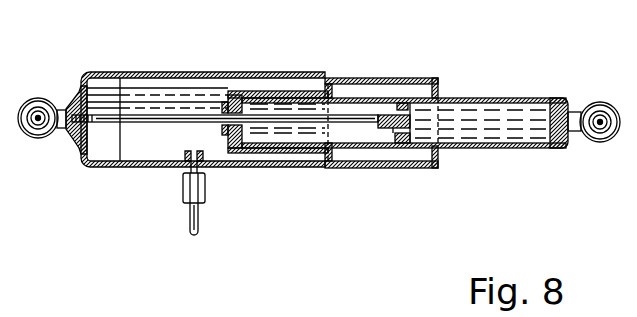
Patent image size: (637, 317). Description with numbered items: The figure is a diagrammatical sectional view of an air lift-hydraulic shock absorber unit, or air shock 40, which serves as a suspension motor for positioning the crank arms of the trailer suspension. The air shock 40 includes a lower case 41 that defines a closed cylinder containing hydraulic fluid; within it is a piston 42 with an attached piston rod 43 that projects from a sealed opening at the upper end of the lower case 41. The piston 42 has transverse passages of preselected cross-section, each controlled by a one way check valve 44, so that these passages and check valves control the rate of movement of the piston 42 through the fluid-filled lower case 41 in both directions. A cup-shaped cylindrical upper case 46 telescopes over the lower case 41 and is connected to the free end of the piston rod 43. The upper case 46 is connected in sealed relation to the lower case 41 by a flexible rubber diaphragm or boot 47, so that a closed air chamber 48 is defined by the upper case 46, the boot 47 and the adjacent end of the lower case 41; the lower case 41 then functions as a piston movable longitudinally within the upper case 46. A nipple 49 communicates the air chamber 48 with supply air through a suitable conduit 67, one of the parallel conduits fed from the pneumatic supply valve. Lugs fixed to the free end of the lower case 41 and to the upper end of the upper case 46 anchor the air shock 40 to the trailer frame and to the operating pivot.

The air shock 40 is at (370, 78).
The lower case 41 is at (510, 98).
The piston 42 is at (412, 150).
The piston rod 43 is at (127, 118).
The one way check valve 44 is at (395, 128).
The upper case 46 is at (148, 80).
The boot 47 is at (323, 154).
The air chamber 48 is at (145, 143).
The nipple 49 is at (205, 176).
The conduit 67 is at (203, 227).